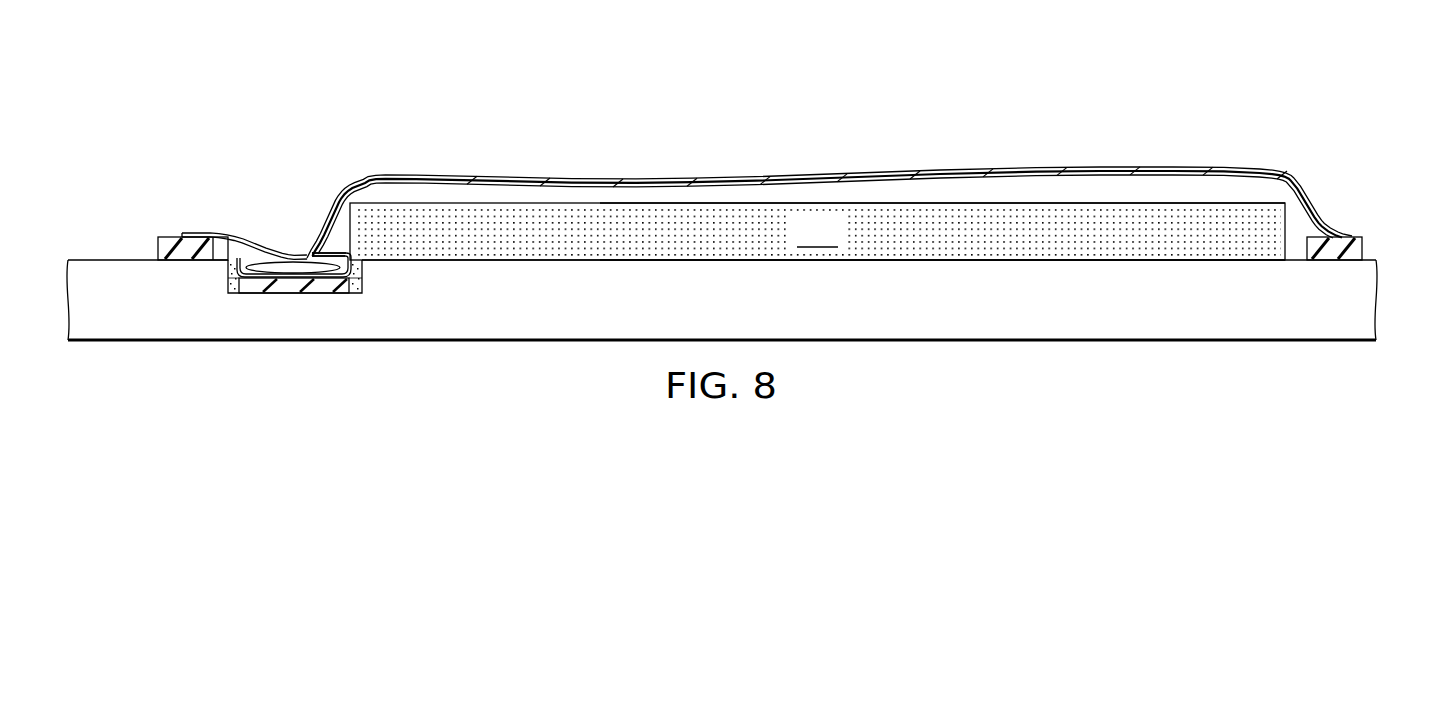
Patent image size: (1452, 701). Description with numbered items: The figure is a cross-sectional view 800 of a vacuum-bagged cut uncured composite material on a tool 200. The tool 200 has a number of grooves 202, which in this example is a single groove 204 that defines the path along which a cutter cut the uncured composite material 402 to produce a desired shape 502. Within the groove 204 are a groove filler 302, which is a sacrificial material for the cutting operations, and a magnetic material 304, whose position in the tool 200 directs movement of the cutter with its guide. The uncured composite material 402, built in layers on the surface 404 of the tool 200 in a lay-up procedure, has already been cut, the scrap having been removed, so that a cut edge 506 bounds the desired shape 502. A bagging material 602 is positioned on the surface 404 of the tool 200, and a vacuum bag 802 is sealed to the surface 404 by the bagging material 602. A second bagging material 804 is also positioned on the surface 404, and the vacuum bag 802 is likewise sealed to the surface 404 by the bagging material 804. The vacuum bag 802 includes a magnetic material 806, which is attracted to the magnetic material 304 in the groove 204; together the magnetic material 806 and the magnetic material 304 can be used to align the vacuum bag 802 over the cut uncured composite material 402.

The view 800 is at (610, 101).
The tool 200 is at (742, 317).
The number of grooves 202 is at (285, 230).
The groove 204 is at (243, 258).
The groove filler 302 is at (362, 285).
The magnetic material 304 is at (293, 286).
The uncured composite material 402 is at (838, 247).
The surface 404 is at (943, 261).
The desired shape 502 is at (941, 194).
The cut edge 506 is at (319, 232).
The bagging material 602 is at (160, 248).
The vacuum bag 802 is at (730, 178).
The bagging material 804 is at (1362, 247).
The magnetic material 806 is at (313, 258).